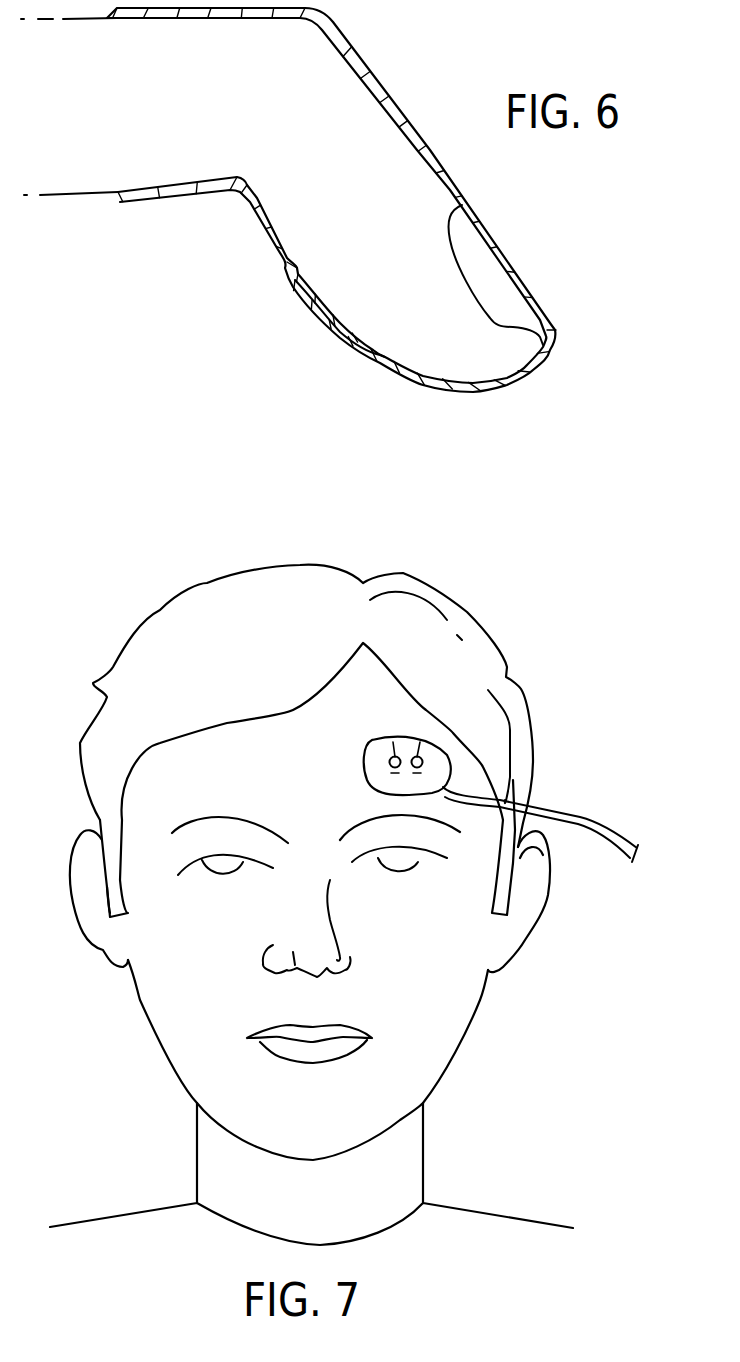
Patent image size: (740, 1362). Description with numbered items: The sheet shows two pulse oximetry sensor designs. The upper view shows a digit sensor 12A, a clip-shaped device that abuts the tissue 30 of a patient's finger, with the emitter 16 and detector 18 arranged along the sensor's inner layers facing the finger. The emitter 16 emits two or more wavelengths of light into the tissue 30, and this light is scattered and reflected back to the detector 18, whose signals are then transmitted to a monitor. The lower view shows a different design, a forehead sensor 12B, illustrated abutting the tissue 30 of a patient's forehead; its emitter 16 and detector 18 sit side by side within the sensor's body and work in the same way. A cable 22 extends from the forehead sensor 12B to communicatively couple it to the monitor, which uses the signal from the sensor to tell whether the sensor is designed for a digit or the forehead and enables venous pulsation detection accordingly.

In FIG. 6, the digit sensor 12A is at (288, 233).
In FIG. 7, the forehead sensor 12B is at (379, 745).
In FIG. 6, the emitter 16 is at (297, 293).
In FIG. 7, the emitter 16 is at (392, 742).
In FIG. 6, the detector 18 is at (360, 357).
In FIG. 7, the detector 18 is at (427, 735).
In FIG. 7, the cable 22 is at (593, 840).
In FIG. 6, the tissue 30 is at (376, 221).
In FIG. 7, the tissue 30 is at (272, 770).